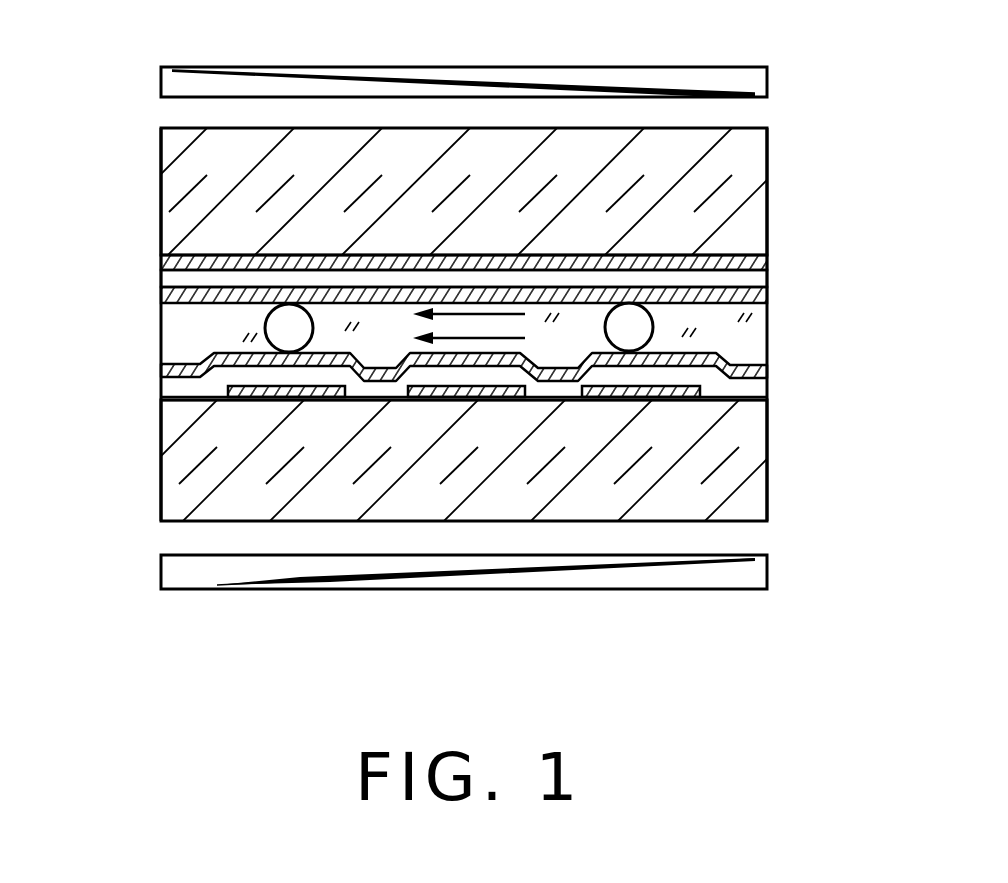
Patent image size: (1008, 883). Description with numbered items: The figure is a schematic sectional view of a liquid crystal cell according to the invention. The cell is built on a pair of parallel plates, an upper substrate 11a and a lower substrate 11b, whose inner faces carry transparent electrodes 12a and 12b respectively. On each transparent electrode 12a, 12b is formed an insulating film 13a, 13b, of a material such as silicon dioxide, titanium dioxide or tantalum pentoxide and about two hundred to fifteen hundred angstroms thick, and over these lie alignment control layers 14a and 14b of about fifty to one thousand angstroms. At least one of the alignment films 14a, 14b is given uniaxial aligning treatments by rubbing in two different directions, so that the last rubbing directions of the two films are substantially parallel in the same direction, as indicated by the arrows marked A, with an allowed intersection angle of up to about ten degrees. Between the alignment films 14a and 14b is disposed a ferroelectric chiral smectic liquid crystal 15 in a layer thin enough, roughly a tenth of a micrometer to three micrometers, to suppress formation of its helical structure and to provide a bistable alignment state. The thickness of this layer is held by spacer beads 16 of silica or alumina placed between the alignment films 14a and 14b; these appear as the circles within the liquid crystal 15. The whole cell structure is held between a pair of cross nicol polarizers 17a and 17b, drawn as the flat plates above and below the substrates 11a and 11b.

The upper substrate 11a is at (753, 207).
The transparent electrode 12a is at (753, 267).
The insulating film 13a is at (753, 280).
The alignment control layer 14a is at (753, 297).
The ferroelectric chiral smectic liquid crystal 15 is at (753, 342).
The spacer beads 16 is at (275, 326).
The alignment control layer 14b is at (753, 372).
The insulating film 13b is at (753, 392).
The transparent electrode 12b is at (753, 400).
The lower substrate 11b is at (753, 502).
The cross nicol polarizer 17a is at (178, 82).
The cross nicol polarizer 17b is at (178, 567).